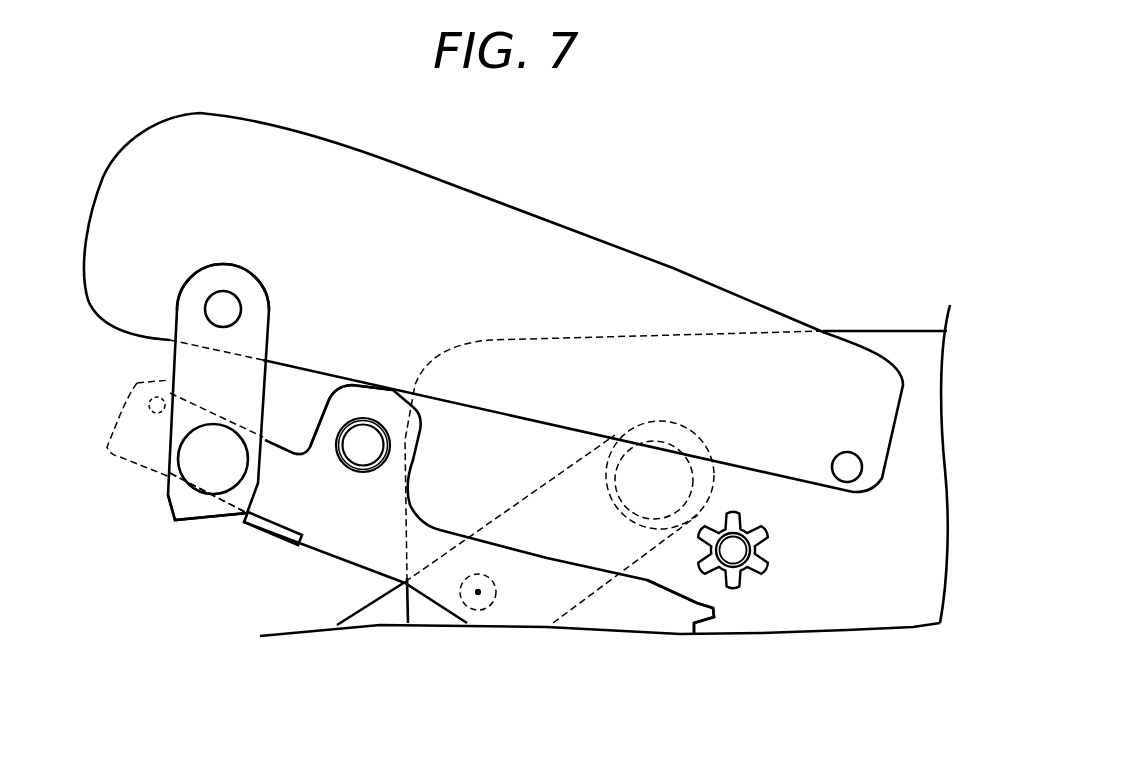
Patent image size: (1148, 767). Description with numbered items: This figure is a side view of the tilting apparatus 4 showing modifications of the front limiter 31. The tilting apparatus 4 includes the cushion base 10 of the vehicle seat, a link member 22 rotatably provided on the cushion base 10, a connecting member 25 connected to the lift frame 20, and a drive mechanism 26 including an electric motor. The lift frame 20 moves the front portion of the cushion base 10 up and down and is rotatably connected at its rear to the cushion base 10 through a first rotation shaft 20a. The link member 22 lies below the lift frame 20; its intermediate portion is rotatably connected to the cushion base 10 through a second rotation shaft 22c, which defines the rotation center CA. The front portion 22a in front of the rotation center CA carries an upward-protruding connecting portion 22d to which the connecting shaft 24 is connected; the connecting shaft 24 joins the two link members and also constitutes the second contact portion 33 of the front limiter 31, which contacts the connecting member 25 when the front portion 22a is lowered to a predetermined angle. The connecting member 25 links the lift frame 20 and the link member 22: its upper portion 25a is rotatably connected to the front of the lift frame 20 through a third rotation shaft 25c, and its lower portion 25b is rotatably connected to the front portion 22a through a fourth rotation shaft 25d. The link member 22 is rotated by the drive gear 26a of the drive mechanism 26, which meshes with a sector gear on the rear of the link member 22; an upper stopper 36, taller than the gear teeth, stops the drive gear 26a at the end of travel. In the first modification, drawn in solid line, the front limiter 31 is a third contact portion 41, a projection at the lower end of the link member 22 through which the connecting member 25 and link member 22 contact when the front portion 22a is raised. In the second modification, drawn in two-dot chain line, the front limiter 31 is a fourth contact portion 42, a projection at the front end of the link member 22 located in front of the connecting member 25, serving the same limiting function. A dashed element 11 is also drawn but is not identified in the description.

The tilting apparatus 4 is at (119, 132).
The cushion base 10 is at (893, 330).
The pivot hole 11 is at (490, 520).
The lift frame 20 is at (327, 141).
The first rotation shaft 20a is at (848, 452).
The link member 22 is at (337, 550).
The front portion 22a is at (214, 500).
The second rotation shaft 22c is at (497, 596).
The connecting portion 22d is at (323, 403).
The connecting shaft 24 is at (373, 418).
The second contact portion 33 is at (363, 445).
The connecting member 25 is at (172, 350).
The upper portion 25a is at (203, 264).
The lower portion 25b is at (180, 470).
The third rotation shaft 25c is at (205, 305).
The fourth rotation shaft 25d is at (166, 499).
The drive mechanism 26 is at (799, 563).
The drive gear 26a is at (811, 577).
The front limiter 31 is at (223, 601).
The upper stopper 36 is at (713, 607).
The third contact portion 41 is at (267, 537).
The fourth contact portion 42 is at (137, 383).
The rotation center CA is at (479, 600).